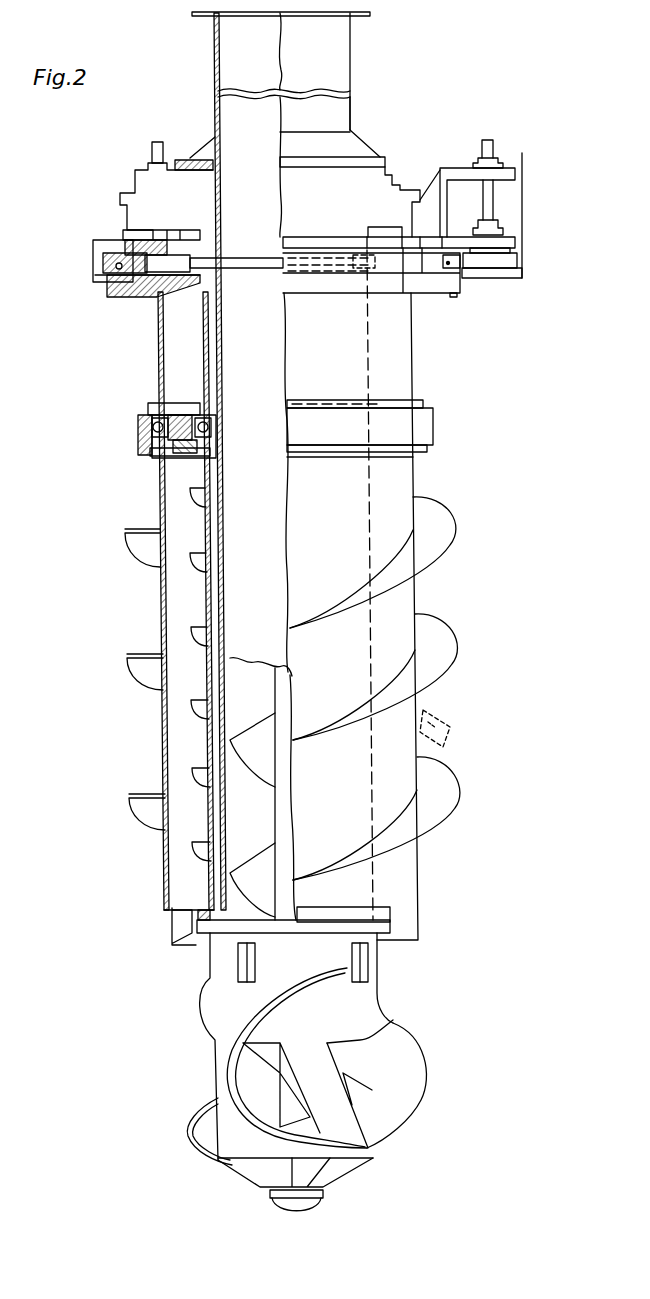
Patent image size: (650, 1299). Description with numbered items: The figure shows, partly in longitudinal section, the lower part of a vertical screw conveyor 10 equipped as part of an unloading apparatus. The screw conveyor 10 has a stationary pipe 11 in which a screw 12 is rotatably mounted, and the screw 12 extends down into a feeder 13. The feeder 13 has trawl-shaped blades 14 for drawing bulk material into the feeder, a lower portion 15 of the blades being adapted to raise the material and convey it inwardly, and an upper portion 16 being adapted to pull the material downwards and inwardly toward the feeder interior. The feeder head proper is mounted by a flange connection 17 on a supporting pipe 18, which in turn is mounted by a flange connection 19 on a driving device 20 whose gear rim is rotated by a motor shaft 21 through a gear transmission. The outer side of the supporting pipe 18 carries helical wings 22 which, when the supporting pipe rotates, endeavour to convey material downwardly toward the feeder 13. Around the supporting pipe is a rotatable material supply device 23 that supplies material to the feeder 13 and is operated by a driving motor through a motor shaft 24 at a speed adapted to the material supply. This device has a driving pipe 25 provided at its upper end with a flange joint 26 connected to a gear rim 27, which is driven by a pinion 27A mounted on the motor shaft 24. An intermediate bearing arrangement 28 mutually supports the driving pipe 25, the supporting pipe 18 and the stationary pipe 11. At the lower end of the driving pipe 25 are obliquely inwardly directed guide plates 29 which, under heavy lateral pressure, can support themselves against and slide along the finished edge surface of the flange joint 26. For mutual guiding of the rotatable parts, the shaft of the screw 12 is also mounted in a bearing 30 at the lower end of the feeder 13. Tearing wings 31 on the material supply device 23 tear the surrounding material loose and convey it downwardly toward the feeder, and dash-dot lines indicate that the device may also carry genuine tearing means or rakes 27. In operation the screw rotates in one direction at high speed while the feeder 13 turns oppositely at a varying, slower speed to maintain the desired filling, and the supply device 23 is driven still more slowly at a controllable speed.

The screw conveyor 10 is at (354, 80).
The stationary pipe 11 is at (340, 62).
The screw 12 is at (250, 740).
The feeder 13 is at (394, 1005).
The trawl-shaped blades 14 is at (407, 1065).
The lower portion of blades 15 is at (233, 1167).
The upper portion of blades 16 is at (300, 980).
The flange connection 17 is at (402, 915).
The supporting pipe 18 is at (208, 883).
The flange connection 19 is at (185, 290).
The driving device 20 is at (117, 188).
The motor shaft 21 is at (152, 150).
The helical wings 22 is at (197, 767).
The rotatable material supply device 23 is at (426, 593).
The motor shaft 24 is at (488, 148).
The driving pipe 25 is at (160, 600).
The flange joint 26 is at (120, 298).
The gear rim 27 is at (103, 268).
The pinion 27A is at (517, 260).
The intermediate bearing arrangement 28 is at (134, 437).
The guide plates 29 is at (178, 923).
The bearing 30 is at (323, 1193).
The tearing wings 31 is at (435, 645).